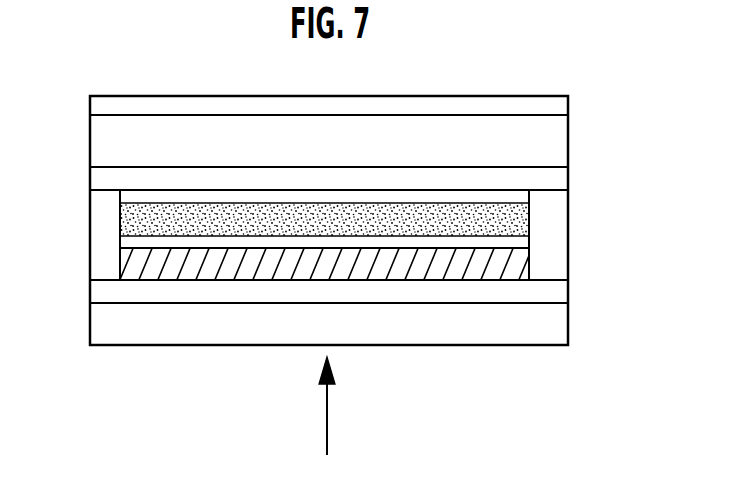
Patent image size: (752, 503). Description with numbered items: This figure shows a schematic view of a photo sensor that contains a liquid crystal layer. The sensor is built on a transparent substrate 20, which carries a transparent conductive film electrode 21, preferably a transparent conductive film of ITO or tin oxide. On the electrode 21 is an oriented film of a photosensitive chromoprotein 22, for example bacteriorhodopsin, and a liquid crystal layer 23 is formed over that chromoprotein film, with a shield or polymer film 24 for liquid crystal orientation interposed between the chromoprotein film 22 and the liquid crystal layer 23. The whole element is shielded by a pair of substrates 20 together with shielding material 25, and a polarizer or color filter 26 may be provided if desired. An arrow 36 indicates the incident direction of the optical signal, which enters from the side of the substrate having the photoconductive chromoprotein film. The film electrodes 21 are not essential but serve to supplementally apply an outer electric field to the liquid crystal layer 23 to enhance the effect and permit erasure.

The transparent substrate 20 is at (103, 140).
The transparent conductive film electrode 21 is at (557, 182).
The oriented film of a photosensitive chromoprotein 22 is at (133, 267).
The liquid crystal layer 23 is at (132, 223).
The shield or polymer film 24 is at (128, 193).
The shielding material 25 is at (90, 274).
The polarizer or color filter 26 is at (102, 112).
The arrow 36 is at (329, 422).